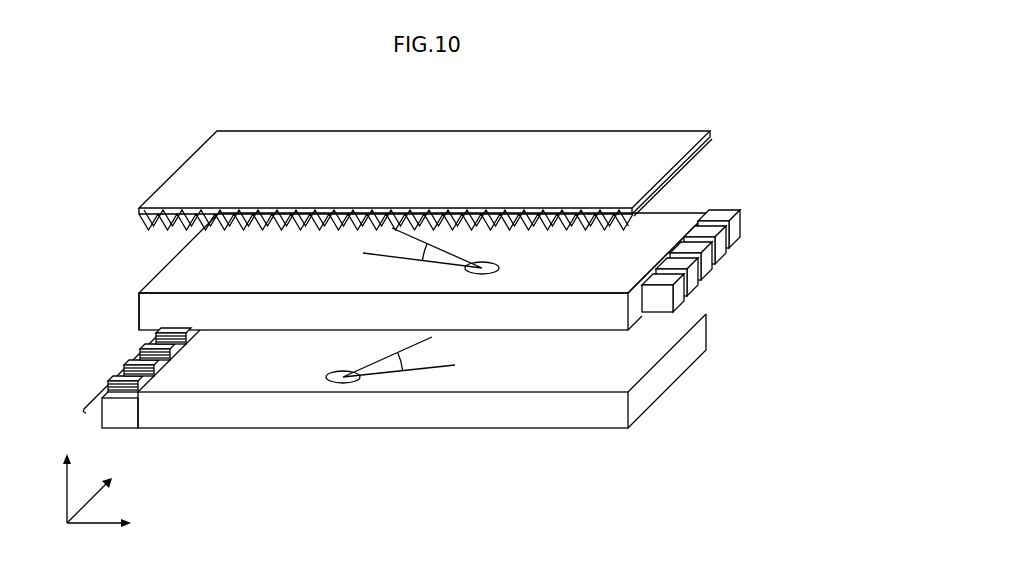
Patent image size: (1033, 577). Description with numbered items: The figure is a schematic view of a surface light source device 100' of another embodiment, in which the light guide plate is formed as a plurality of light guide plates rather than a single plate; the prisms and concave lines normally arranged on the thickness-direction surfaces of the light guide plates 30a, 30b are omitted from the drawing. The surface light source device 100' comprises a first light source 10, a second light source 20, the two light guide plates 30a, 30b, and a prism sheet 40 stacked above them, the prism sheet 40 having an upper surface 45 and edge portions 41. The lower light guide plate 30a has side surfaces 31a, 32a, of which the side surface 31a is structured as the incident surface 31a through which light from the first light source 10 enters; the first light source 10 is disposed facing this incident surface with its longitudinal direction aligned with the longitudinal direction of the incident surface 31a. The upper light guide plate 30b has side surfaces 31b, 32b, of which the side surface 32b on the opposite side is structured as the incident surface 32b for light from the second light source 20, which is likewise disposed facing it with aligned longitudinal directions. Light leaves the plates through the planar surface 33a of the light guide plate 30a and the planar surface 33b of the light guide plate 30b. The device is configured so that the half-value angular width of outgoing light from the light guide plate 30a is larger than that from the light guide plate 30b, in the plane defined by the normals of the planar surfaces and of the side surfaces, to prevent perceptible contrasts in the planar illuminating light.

The surface light source device 100' is at (400, 299).
The prism sheet 40 is at (167, 160).
The upper surface of prism sheet 45 is at (450, 153).
The prism array / side edge of prism sheet 41 is at (133, 218).
The light guide plate 30b is at (146, 259).
The planar surface 33b is at (672, 228).
The side surface 31b is at (137, 318).
The incident surface 32b is at (641, 316).
The second light source 20 is at (743, 252).
The light guide plate 30a is at (219, 437).
The planar surface 33a is at (490, 380).
The incident surface 31a is at (131, 409).
The side surface 32a is at (652, 392).
The first light source 10 is at (137, 370).